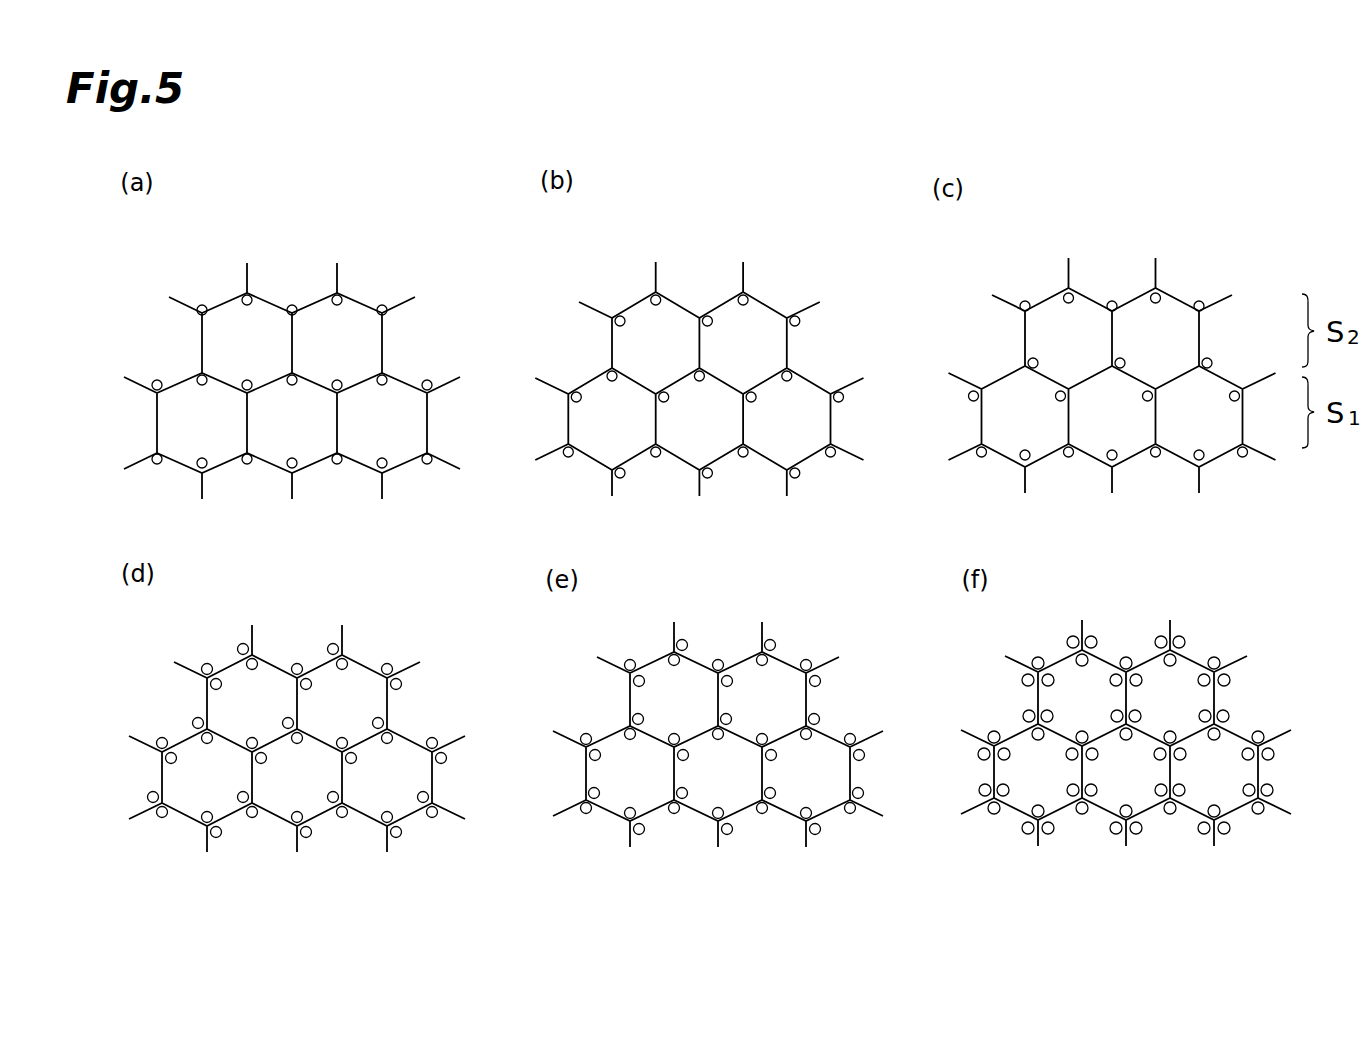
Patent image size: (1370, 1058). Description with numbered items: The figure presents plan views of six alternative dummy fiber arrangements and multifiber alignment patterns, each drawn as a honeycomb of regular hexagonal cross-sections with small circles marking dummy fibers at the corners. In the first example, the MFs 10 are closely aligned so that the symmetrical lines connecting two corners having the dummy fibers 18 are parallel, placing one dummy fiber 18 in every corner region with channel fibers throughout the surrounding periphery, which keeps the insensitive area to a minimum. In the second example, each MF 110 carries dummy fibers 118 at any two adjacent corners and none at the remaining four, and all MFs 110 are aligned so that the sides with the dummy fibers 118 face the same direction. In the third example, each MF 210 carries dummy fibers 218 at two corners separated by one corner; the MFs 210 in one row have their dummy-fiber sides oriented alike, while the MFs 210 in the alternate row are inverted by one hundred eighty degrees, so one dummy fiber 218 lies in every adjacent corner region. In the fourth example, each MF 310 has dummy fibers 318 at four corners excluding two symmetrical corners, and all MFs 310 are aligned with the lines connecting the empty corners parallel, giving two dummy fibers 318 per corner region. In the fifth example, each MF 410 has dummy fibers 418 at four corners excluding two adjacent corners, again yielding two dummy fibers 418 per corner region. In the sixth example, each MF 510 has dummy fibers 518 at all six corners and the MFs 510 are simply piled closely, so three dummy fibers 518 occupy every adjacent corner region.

The MF 10 is at (340, 331).
The dummy fiber 18 is at (428, 380).
The MF 110 is at (772, 343).
The dummy fiber 118 is at (845, 395).
The MF 210 is at (1175, 317).
The dummy fiber 218 is at (1236, 393).
The MF 310 is at (370, 702).
The dummy fiber 318 is at (446, 757).
The MF 410 is at (798, 692).
The dummy fiber 418 is at (862, 753).
The MF 510 is at (1205, 690).
The dummy fiber 518 is at (1267, 752).